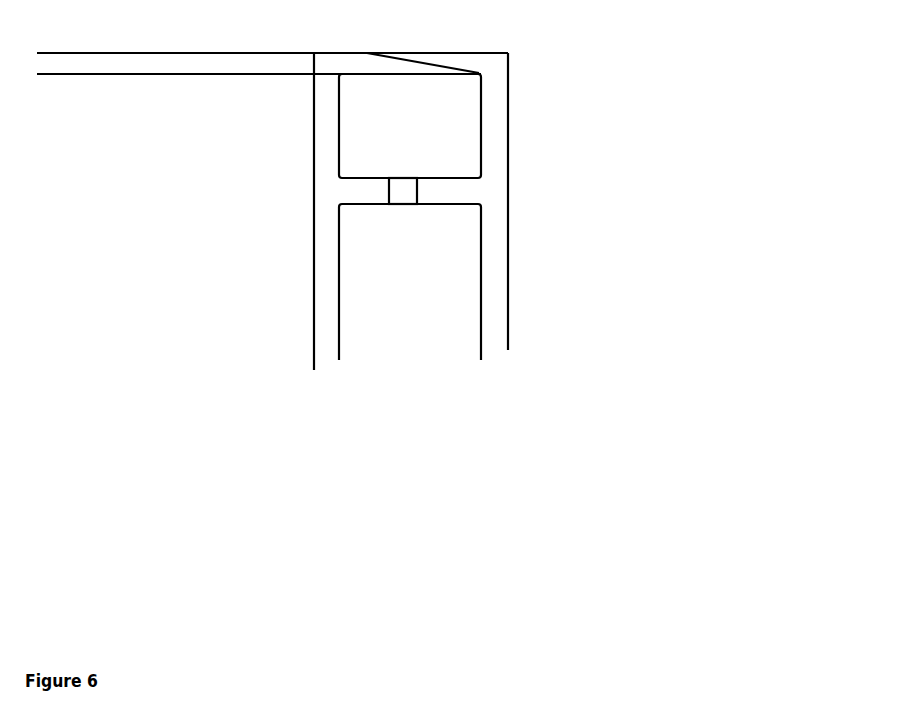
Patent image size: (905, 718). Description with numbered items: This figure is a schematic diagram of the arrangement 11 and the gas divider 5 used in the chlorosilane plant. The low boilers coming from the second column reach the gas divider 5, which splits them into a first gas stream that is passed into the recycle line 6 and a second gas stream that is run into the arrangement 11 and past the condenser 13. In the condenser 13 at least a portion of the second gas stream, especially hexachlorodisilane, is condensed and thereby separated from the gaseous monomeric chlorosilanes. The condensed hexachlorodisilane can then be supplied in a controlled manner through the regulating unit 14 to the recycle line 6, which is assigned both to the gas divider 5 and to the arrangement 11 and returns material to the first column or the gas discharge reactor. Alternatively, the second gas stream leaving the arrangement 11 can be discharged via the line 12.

The gas divider 5 is at (314, 75).
The recycle line 6 is at (327, 296).
The arrangement 11 is at (683, 155).
The line 12 is at (497, 274).
The condenser 13 is at (353, 73).
The regulating unit 14 is at (403, 205).